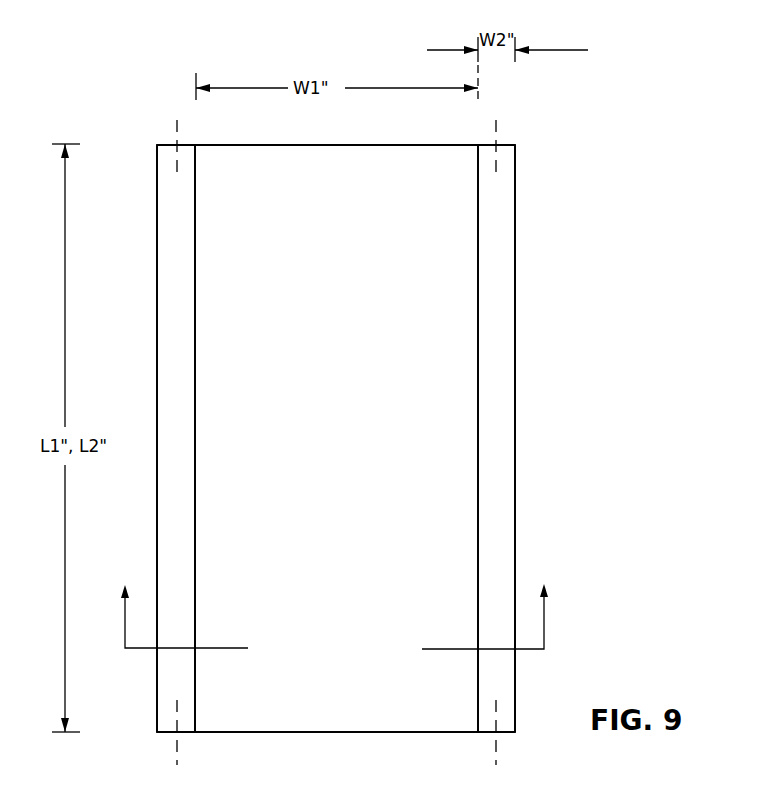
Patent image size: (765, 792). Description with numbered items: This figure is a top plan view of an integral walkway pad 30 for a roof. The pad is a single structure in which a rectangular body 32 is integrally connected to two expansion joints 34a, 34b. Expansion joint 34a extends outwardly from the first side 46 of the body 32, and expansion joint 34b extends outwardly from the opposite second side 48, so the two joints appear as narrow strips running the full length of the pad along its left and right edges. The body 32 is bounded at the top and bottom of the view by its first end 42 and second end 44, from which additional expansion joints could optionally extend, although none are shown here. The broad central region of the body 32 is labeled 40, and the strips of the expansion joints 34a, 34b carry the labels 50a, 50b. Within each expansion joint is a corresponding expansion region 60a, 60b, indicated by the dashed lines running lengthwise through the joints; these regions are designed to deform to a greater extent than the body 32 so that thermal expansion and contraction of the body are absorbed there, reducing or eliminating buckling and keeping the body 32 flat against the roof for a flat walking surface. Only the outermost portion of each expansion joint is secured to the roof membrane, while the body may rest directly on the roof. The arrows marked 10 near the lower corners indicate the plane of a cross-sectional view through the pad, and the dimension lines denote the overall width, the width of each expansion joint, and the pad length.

The walkway pad 30 is at (592, 93).
The body 32 is at (388, 183).
The central portion 40 is at (356, 439).
The first end 42 is at (305, 178).
The second end 44 is at (250, 732).
The expansion joint 34a is at (172, 381).
The expansion joint 34b is at (494, 306).
The first side 46 is at (193, 497).
The second side 48 is at (478, 423).
The left side flap 50a is at (183, 544).
The right side flap 50b is at (490, 498).
The expansion region 60a is at (181, 164).
The expansion region 60b is at (492, 167).
The section line 10- 10 is at (337, 605).